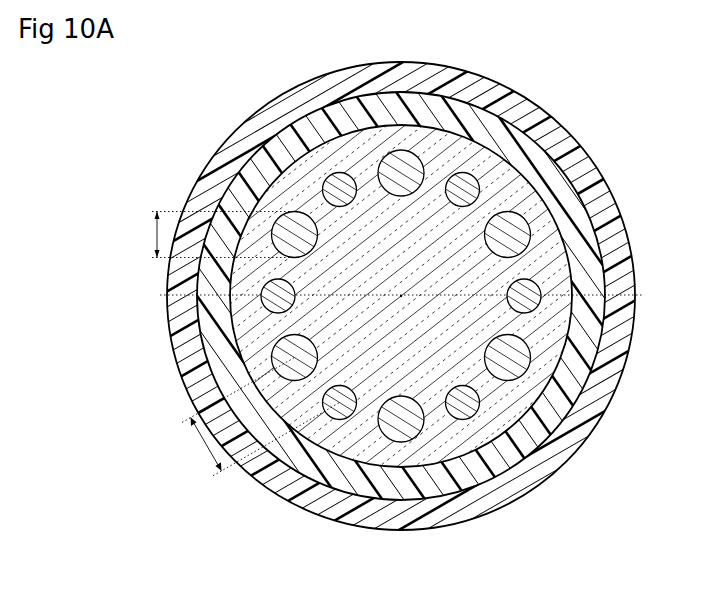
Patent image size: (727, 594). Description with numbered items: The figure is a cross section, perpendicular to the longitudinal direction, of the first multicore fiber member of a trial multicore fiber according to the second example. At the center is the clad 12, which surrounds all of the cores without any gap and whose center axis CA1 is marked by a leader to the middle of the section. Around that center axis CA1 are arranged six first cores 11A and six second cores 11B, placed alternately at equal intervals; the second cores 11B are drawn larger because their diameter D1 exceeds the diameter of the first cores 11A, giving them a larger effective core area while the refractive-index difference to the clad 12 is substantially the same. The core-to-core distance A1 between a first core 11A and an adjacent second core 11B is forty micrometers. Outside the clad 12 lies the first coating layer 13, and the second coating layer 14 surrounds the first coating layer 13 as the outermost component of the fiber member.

The first cores 11A is at (332, 174).
The second cores 11B is at (401, 150).
The clad 12 is at (502, 184).
The first coating layer 13 is at (550, 187).
The second coating layer 14 is at (593, 197).
The diameter of the second cores D1 is at (206, 235).
The core-to-core distance A1 is at (204, 447).
The center axis CA1 is at (402, 297).